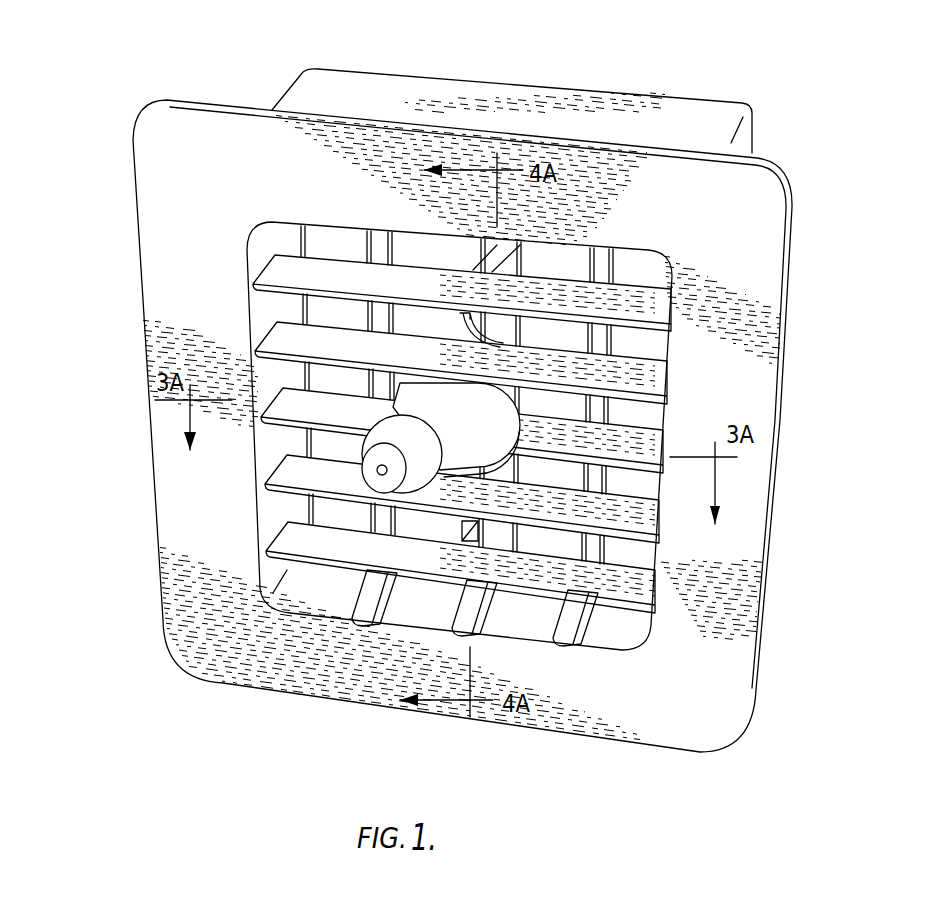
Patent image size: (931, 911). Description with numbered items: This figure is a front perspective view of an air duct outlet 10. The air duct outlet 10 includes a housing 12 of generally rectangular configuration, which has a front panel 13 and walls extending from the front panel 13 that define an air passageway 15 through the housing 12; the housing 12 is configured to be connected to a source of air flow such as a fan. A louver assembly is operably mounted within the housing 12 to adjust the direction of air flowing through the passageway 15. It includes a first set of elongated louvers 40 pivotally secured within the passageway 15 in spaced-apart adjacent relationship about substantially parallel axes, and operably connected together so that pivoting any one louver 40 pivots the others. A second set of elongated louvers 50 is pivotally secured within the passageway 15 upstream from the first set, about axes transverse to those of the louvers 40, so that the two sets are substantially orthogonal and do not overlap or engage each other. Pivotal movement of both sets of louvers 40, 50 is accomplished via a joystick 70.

The air duct outlet 10 is at (447, 379).
The housing 12 is at (288, 91).
The front panel 13 is at (725, 558).
The air passageway 15 is at (627, 587).
The first set of elongated louvers 40 is at (610, 370).
The second set of elongated louvers 50 is at (607, 263).
The joystick 70 is at (344, 455).